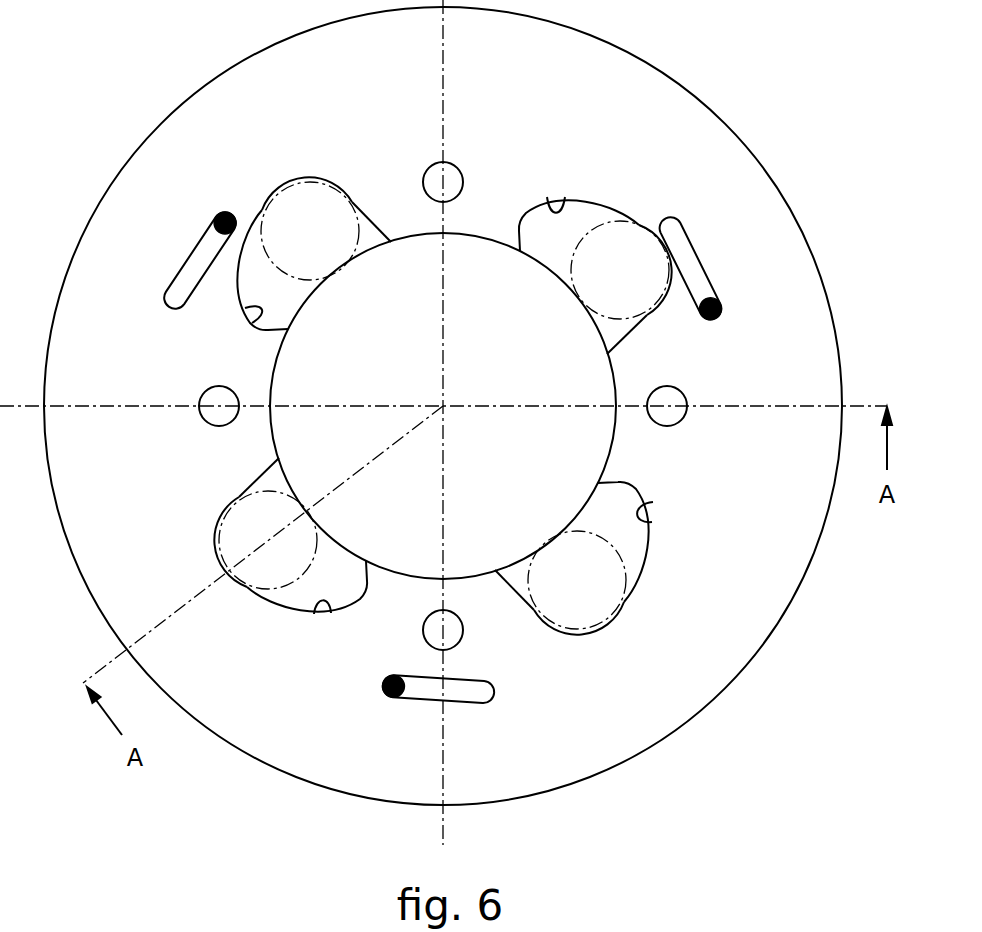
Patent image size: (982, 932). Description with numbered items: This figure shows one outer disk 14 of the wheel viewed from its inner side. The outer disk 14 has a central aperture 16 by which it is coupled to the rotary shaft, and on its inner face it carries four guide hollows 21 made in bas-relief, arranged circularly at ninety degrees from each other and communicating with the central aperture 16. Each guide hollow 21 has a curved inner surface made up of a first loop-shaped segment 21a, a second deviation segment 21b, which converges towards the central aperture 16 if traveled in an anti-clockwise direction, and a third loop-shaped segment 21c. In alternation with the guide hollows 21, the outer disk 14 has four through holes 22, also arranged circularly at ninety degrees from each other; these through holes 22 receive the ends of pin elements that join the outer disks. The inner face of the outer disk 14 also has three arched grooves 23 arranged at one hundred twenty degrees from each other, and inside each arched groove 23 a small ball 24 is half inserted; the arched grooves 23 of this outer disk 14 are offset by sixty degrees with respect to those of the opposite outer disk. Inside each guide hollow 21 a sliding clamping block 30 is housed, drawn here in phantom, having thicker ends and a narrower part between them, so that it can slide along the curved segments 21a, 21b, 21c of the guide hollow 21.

The outer disk 14 is at (627, 76).
The central aperture 16 is at (462, 238).
The guide hollow 21 is at (434, 411).
The first loop-shaped segment 21a is at (360, 211).
The second deviation segment 21b is at (250, 228).
The third loop-shaped segment 21c is at (264, 322).
The through hole 22 is at (457, 171).
The arched groove 23 is at (191, 249).
The small ball 24 is at (222, 212).
The sliding clamping block 30 is at (315, 198).